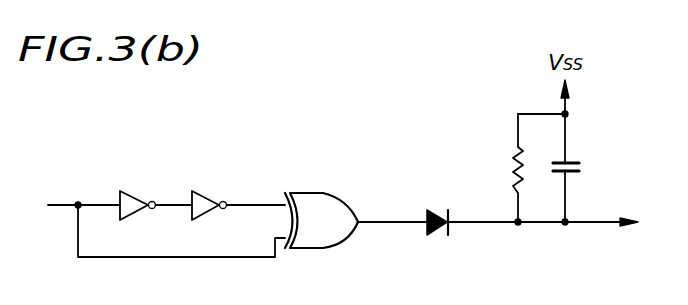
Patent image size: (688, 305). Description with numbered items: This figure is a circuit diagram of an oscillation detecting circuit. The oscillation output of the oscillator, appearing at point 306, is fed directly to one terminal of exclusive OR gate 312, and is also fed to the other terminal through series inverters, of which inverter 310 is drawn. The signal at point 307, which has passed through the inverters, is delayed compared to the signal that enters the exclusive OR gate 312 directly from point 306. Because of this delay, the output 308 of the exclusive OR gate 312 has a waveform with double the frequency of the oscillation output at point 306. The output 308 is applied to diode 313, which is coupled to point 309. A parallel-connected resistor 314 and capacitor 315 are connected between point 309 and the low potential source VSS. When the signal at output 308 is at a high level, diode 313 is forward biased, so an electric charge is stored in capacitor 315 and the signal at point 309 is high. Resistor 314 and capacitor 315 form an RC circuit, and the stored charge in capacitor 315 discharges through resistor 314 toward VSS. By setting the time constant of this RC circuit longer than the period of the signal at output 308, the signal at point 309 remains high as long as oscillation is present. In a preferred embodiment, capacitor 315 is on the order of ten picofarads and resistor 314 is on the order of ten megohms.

The point 306 is at (57, 197).
The inverter 310 is at (145, 173).
The point 307 is at (250, 203).
The exclusive OR gate 312 is at (337, 210).
The output 308 is at (393, 225).
The diode 313 is at (436, 213).
The point 309 is at (548, 223).
The resistor 314 is at (513, 167).
The capacitor 315 is at (577, 171).